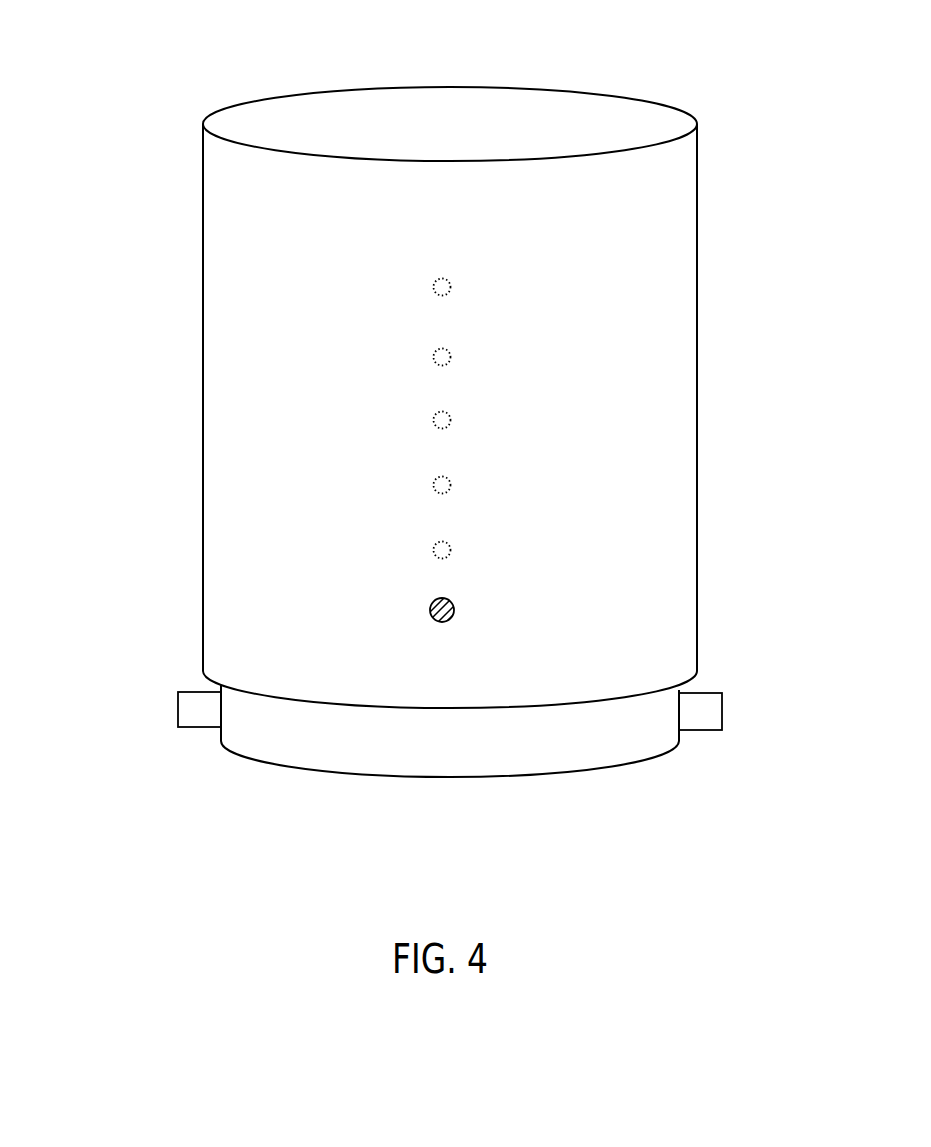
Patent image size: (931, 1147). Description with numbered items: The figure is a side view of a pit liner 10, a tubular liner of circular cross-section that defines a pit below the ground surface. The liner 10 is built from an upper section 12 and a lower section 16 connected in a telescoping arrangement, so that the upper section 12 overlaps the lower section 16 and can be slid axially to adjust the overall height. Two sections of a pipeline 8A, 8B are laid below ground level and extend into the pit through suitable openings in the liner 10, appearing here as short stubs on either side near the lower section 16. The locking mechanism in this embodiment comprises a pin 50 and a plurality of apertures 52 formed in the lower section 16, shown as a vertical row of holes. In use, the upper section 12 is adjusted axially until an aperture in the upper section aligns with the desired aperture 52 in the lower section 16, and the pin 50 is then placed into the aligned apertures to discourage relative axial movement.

The tubular liner 10 is at (589, 53).
The upper section 12 is at (672, 263).
The lower section 16 is at (302, 730).
The pipeline section 8A is at (188, 704).
The pipeline section 8B is at (712, 709).
The pin 50 is at (452, 603).
The apertures 52 is at (449, 421).